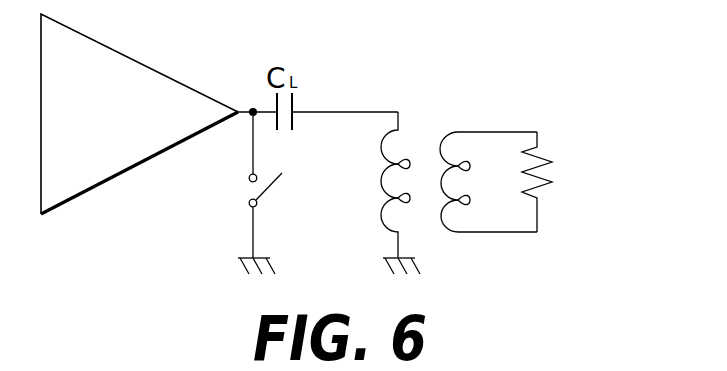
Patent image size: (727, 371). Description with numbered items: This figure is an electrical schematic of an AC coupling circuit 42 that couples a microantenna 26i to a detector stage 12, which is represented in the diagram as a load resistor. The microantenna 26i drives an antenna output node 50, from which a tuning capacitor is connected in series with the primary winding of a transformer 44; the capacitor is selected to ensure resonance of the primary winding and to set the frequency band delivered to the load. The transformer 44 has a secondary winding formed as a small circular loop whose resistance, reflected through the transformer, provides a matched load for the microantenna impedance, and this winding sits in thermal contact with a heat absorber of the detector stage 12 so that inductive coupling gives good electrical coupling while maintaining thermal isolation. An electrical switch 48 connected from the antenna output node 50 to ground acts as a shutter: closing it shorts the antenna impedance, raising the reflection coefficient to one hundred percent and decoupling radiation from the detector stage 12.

The microantenna 26i is at (133, 60).
The antenna output node 50 is at (249, 109).
The electrical switch 48 is at (249, 191).
The AC coupling circuit 42 is at (402, 60).
The transformer 44 is at (423, 137).
The detector stage 12 is at (541, 143).